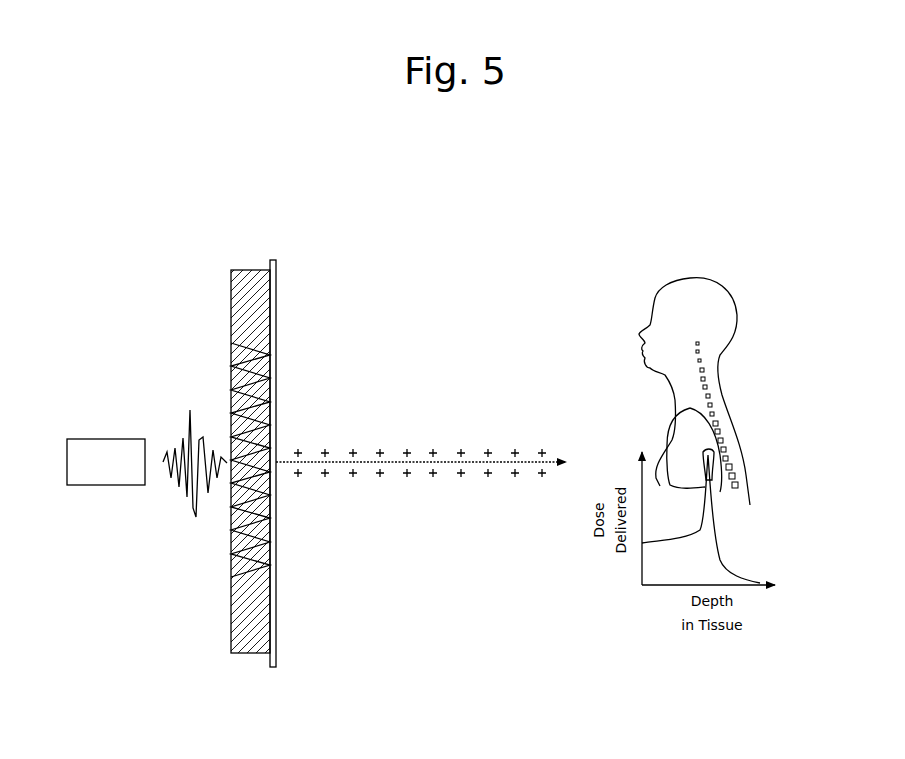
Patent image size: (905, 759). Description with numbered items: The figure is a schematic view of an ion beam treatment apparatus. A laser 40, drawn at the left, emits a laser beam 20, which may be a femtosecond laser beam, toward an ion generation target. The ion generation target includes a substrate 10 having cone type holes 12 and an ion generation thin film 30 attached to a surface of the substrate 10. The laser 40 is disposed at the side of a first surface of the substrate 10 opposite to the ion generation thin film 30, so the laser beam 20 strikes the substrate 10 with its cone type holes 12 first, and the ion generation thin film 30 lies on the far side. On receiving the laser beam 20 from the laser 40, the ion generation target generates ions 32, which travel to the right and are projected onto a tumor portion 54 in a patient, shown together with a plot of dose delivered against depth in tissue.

The substrate 10 is at (252, 281).
The cone type holes 12 is at (231, 532).
The laser beam 20 is at (188, 405).
The ion generation thin film 30 is at (280, 315).
The ions 32 is at (410, 446).
The laser 40 is at (116, 452).
The tumor portion 54 is at (702, 453).